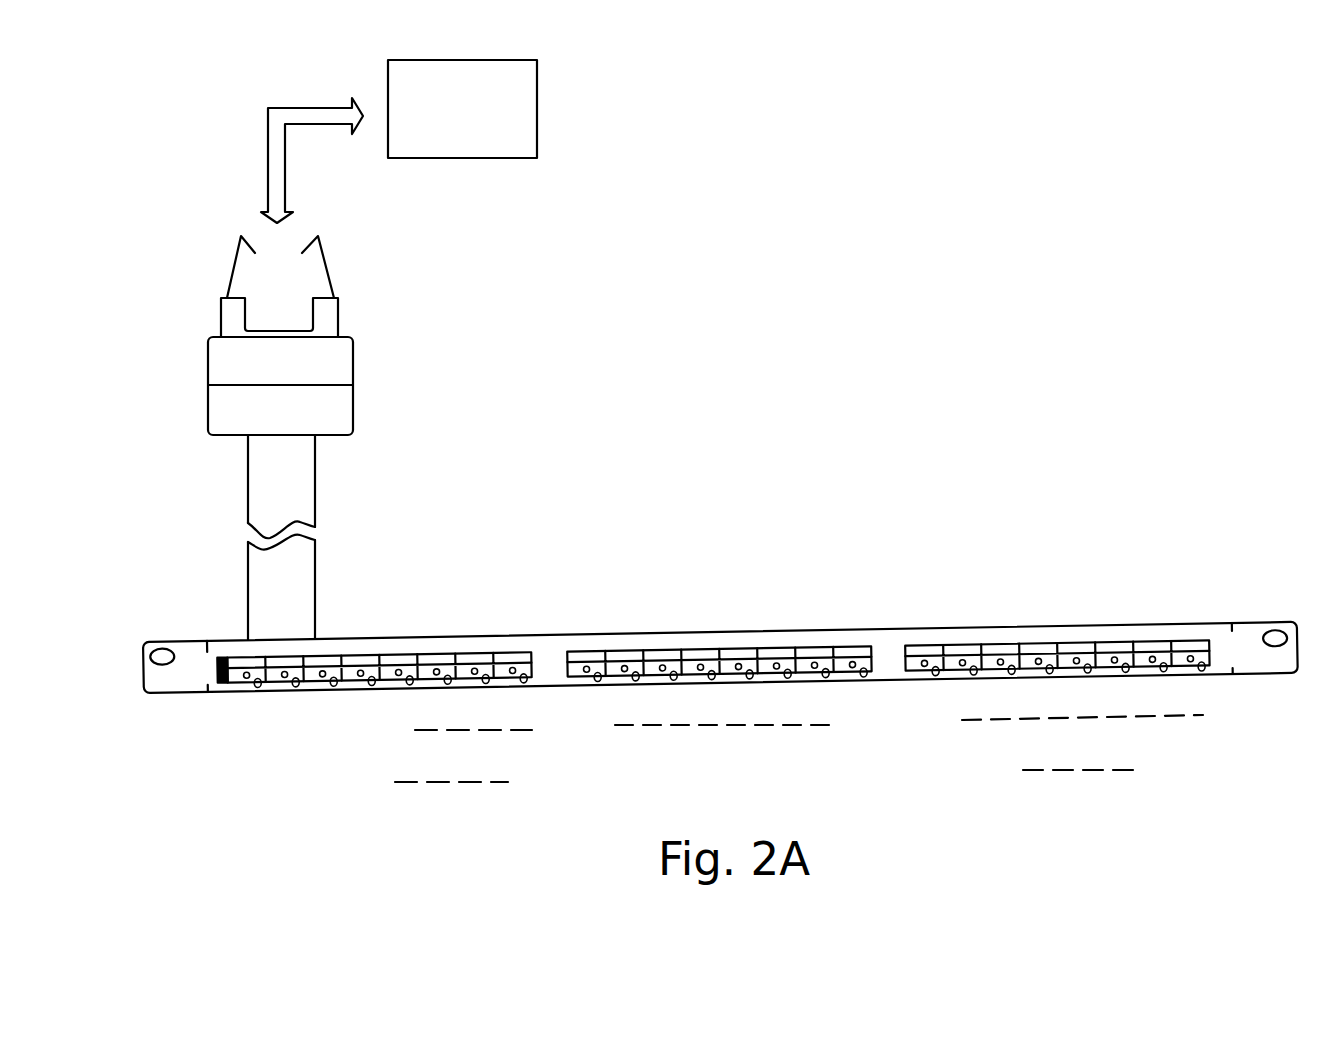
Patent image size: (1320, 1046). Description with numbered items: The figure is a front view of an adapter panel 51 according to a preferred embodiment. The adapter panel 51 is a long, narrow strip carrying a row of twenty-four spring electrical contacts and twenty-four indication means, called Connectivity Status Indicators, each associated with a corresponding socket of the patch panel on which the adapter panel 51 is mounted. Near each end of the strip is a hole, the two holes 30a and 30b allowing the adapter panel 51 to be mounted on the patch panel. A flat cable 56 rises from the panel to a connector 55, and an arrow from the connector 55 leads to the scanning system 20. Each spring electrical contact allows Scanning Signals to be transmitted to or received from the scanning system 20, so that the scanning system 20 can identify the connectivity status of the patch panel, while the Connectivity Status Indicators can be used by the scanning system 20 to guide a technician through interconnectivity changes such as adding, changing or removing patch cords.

The scanning system 20 is at (537, 122).
The connector 55 is at (337, 370).
The flat cable 56 is at (300, 608).
The adapter panel 51 is at (563, 632).
The hole 30a is at (160, 652).
The hole 30b is at (1273, 628).